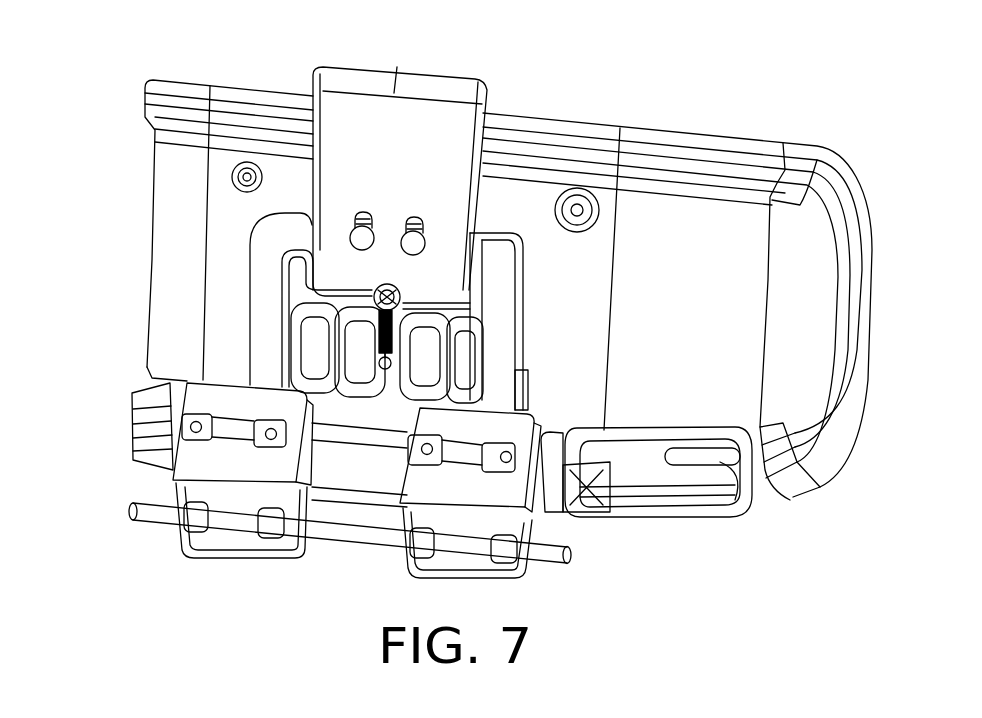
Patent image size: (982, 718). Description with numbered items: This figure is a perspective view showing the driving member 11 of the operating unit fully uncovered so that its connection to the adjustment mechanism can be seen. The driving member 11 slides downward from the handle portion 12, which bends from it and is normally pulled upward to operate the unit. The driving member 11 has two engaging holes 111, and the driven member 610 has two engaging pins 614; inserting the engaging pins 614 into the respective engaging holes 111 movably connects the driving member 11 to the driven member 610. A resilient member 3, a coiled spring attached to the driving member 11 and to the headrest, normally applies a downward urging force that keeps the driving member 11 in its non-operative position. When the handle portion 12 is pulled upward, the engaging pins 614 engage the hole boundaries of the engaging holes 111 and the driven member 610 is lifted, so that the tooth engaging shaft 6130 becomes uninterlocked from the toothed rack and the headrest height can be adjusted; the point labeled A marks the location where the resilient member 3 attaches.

The driving member 11 is at (332, 117).
The handle portion 12 is at (394, 75).
The engaging holes 111 is at (350, 220).
The engaging pins 614 is at (350, 237).
The rivet A is at (376, 294).
The resilient member 3 is at (378, 333).
The driven member 610 is at (258, 333).
The tooth engaging shaft 6130 is at (347, 533).